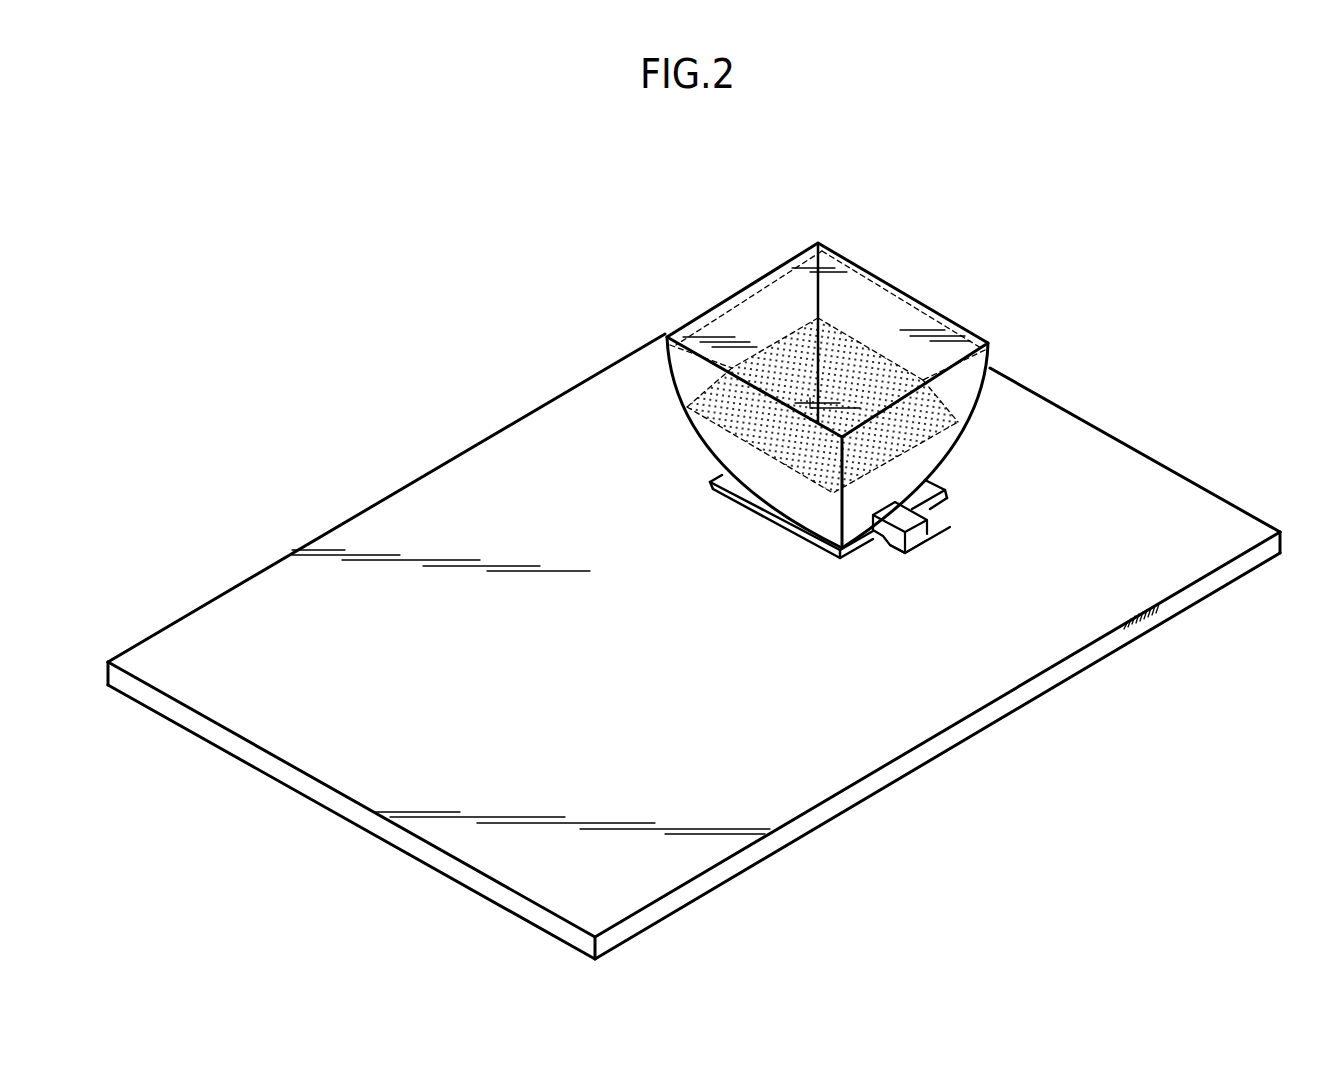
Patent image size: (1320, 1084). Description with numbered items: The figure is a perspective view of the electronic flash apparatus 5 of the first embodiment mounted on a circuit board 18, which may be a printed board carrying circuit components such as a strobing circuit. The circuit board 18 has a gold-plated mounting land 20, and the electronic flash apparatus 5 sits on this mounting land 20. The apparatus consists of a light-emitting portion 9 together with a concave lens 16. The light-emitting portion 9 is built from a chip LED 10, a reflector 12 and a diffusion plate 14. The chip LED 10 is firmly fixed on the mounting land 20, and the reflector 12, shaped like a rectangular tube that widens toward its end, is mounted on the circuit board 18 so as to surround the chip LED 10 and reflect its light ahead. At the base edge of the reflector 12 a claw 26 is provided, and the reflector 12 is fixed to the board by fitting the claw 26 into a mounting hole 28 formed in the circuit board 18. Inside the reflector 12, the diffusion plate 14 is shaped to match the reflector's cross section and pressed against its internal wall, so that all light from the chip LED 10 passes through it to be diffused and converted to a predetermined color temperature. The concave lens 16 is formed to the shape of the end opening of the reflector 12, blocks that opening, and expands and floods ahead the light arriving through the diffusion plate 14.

The electronic flash apparatus 5 is at (840, 418).
The light-emitting portion 9 is at (975, 470).
The chip LED 10 is at (760, 455).
The reflector 12 is at (972, 388).
The diffusion plate 14 is at (697, 387).
The concave lens 16 is at (768, 310).
The circuit board 18 is at (475, 487).
The mounting land 20 is at (790, 524).
The claw 26 is at (920, 534).
The mounting hole 28 is at (908, 557).